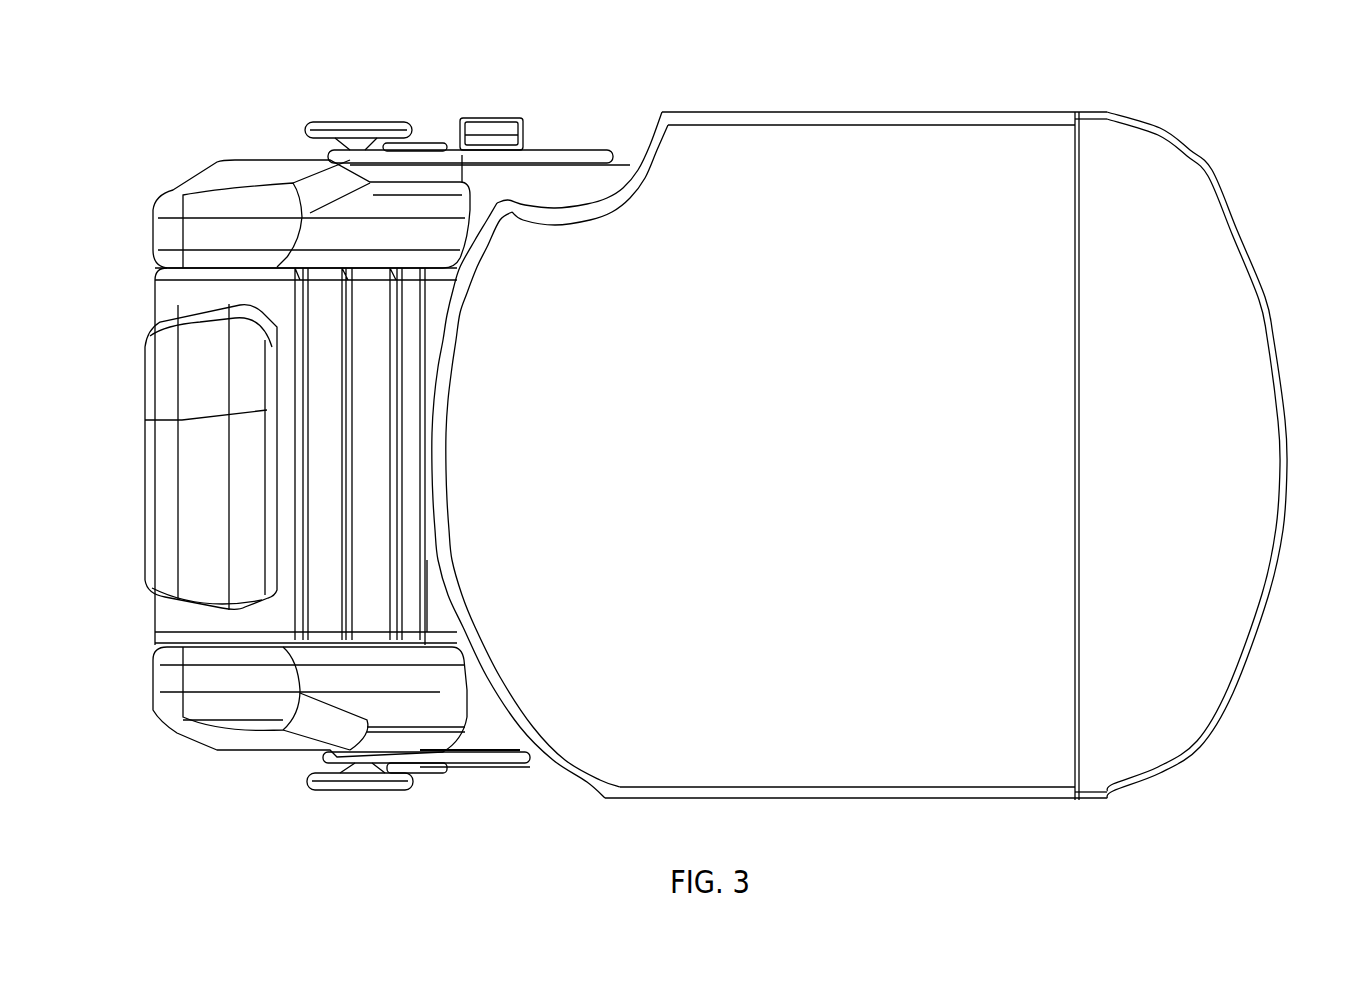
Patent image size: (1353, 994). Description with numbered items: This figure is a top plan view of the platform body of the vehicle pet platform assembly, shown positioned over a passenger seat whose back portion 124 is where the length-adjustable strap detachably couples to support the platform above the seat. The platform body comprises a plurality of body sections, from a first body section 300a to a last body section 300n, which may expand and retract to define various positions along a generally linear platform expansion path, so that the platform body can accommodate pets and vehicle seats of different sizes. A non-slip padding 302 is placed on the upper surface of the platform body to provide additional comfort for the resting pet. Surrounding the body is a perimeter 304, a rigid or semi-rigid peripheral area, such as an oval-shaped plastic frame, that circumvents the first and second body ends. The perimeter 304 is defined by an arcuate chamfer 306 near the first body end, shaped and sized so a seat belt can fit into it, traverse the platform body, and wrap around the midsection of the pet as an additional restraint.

The back portion 124 is at (192, 625).
The body section 300a is at (688, 160).
The body section 300n is at (1207, 235).
The non-slip padding 302 is at (819, 488).
The perimeter 304 is at (1160, 128).
The arcuate chamfer 306 is at (596, 188).